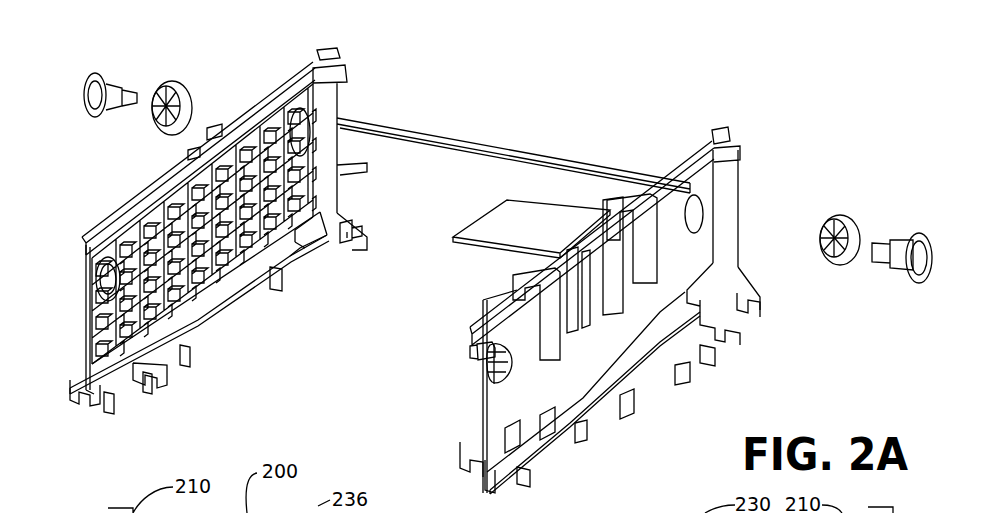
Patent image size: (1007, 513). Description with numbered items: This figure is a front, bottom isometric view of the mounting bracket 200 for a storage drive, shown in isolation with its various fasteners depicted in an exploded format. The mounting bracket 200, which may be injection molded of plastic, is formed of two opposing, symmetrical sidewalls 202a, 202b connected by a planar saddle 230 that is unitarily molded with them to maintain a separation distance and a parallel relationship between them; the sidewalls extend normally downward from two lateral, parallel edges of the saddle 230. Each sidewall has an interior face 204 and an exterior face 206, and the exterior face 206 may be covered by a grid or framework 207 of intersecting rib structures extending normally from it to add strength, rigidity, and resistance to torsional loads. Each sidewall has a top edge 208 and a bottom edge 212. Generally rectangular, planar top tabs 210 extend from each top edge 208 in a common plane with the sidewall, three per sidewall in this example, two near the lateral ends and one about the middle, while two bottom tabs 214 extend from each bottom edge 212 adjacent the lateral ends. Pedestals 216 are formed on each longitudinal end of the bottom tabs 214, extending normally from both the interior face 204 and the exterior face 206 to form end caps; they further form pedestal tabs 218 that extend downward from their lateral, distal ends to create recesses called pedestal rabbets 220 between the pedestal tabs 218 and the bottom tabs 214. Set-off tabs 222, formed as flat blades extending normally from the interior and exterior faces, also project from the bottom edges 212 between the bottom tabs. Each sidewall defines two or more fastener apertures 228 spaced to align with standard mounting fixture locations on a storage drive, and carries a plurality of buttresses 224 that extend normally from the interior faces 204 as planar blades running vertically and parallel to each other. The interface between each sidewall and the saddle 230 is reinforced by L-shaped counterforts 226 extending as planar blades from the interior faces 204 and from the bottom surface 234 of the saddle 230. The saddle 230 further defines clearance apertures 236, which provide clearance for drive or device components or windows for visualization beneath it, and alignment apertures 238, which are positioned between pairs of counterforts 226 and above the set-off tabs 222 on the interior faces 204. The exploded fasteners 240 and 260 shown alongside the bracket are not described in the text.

The mounting bracket 200 is at (756, 80).
The sidewall 202a is at (218, 315).
The sidewall 202b is at (647, 377).
The interior face 204 is at (498, 409).
The exterior face 206 is at (173, 210).
The framework 207 is at (180, 183).
The top edge 208 is at (267, 107).
The top tabs 210 is at (213, 137).
The bottom edge 212 is at (200, 322).
The bottom tabs 214 is at (110, 413).
The pedestals 216 is at (350, 212).
The pedestal tabs 218 is at (72, 408).
The pedestal rabbets 220 is at (158, 383).
The set-off tabs 222 is at (572, 432).
The buttresses 224 is at (617, 313).
The counterforts 226 is at (553, 362).
The fastener apertures 228 is at (320, 134).
The saddle 230 is at (457, 140).
The bottom surface 234 is at (407, 252).
The clearance apertures 236 is at (534, 206).
The alignment apertures 238 is at (615, 190).
The washer 240 is at (100, 280).
The gear 260 is at (178, 88).